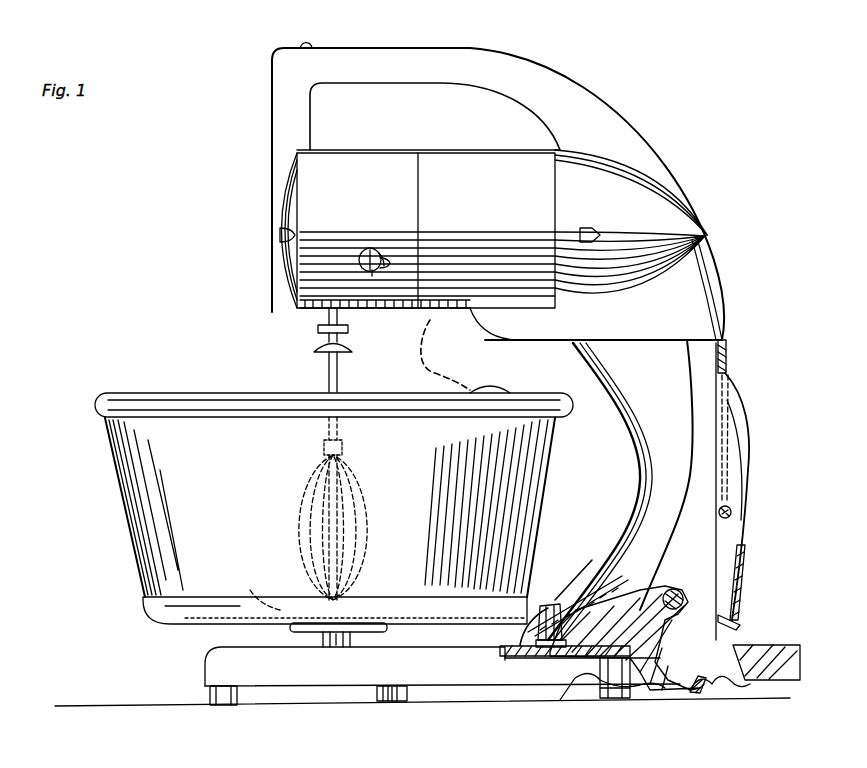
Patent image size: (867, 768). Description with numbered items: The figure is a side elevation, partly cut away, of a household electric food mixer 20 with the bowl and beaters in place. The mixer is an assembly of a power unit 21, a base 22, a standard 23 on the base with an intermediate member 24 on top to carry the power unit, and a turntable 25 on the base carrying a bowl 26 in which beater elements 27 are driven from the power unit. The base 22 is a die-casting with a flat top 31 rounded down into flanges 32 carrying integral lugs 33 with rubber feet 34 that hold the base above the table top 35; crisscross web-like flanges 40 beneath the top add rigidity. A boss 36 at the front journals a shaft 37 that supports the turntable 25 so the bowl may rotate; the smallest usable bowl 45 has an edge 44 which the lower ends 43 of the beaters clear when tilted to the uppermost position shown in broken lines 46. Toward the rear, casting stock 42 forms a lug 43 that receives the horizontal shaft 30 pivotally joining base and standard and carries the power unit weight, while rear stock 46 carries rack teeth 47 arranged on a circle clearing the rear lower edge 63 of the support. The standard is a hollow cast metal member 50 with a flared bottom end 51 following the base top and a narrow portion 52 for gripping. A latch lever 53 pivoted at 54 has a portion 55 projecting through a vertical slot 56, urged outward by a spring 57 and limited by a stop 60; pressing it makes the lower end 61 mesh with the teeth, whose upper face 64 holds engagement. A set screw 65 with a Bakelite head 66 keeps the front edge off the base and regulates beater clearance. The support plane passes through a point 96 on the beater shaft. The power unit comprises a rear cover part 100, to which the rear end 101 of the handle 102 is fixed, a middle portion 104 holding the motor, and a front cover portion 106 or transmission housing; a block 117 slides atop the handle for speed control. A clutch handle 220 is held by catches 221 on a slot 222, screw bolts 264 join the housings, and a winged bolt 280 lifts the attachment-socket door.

The food mixer 20 is at (416, 152).
The power unit 21 is at (502, 243).
The base 22 is at (480, 690).
The standard 23 is at (722, 340).
The intermediate member 24 is at (705, 300).
The turntable 25 is at (168, 612).
The bowl 26 is at (143, 536).
The beater elements 27 is at (318, 472).
The shaft 30 is at (680, 592).
The flat top 31 is at (420, 650).
The flanges 32 is at (205, 676).
The lugs 33 is at (372, 700).
The rubber feet 34 is at (236, 698).
The table top 35 is at (78, 706).
The boss 36 is at (350, 645).
The shaft 37 is at (323, 643).
The web-like flanges 40 is at (548, 656).
The stock 42 is at (605, 618).
The lug 43 is at (635, 570).
The edge 44 is at (508, 392).
The smallest bowl 45 is at (465, 504).
The broken lines 46 is at (428, 365).
The rack teeth 47 is at (710, 694).
The hollow cast metal member 50 is at (653, 455).
The flared bottom end 51 is at (528, 628).
The intermediate narrow portion 52 is at (645, 488).
The latch lever 53 is at (742, 478).
The pivot 54 is at (733, 510).
The portion 55 is at (742, 412).
The vertical slot 56 is at (725, 430).
The spring 57 is at (744, 604).
The stop 60 is at (727, 358).
The lower end 61 is at (740, 622).
The rear lower edge 63 is at (742, 648).
The upper face 64 is at (688, 694).
The set screw 65 is at (550, 606).
The Bakelite head 66 is at (562, 645).
The point 96 is at (328, 410).
The rear cover part 100 is at (650, 182).
The rear end 101 is at (688, 192).
The handle 102 is at (578, 82).
The middle portion 104 is at (496, 138).
The front cover portion 106 is at (378, 138).
The block 117 is at (312, 44).
The handle 220 is at (385, 240).
The catches 221 is at (388, 258).
The slot 222 is at (372, 278).
The screw bolts 264 is at (280, 236).
The winged bolt 280 is at (268, 145).